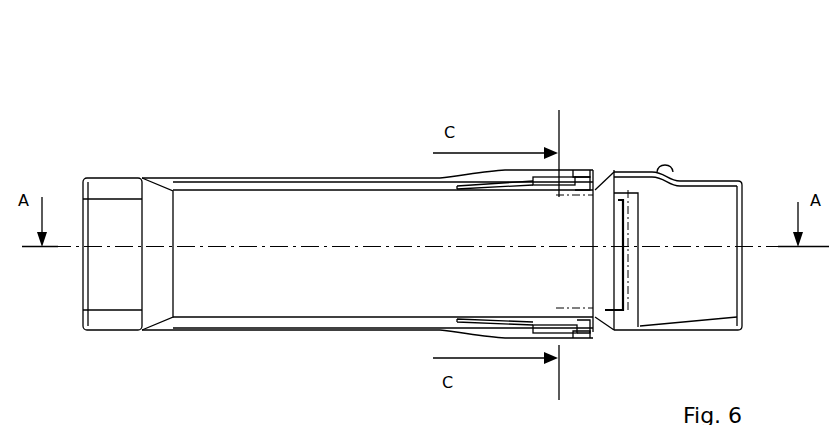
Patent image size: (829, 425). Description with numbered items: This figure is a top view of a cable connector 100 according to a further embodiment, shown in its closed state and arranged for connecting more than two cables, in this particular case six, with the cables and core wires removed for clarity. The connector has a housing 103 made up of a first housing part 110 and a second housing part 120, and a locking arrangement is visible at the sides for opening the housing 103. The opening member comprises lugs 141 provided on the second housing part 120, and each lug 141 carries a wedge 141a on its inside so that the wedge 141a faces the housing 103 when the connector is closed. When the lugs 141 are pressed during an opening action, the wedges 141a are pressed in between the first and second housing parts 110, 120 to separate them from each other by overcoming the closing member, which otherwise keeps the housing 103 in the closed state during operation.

The cable connector 100 is at (357, 90).
The housing 103 is at (299, 168).
The first housing part 110 is at (710, 213).
The second housing part 120 is at (117, 218).
The lug 141 is at (548, 177).
The wedge 141a is at (555, 179).